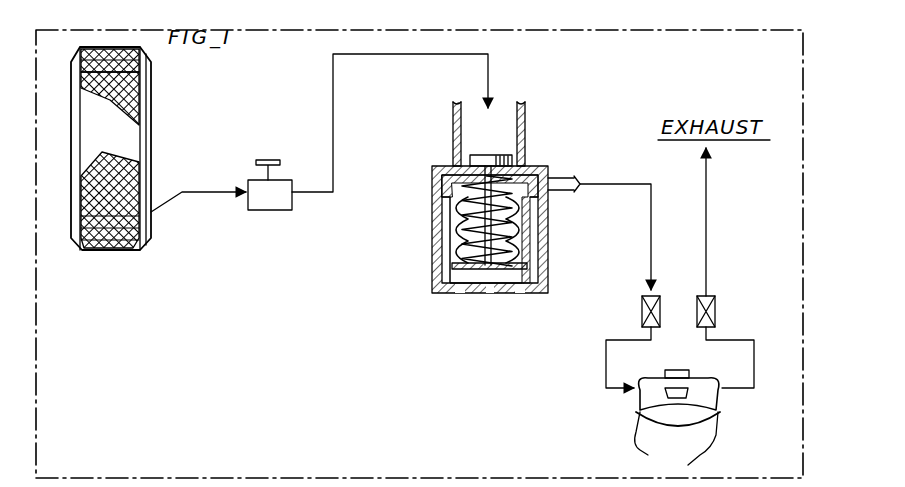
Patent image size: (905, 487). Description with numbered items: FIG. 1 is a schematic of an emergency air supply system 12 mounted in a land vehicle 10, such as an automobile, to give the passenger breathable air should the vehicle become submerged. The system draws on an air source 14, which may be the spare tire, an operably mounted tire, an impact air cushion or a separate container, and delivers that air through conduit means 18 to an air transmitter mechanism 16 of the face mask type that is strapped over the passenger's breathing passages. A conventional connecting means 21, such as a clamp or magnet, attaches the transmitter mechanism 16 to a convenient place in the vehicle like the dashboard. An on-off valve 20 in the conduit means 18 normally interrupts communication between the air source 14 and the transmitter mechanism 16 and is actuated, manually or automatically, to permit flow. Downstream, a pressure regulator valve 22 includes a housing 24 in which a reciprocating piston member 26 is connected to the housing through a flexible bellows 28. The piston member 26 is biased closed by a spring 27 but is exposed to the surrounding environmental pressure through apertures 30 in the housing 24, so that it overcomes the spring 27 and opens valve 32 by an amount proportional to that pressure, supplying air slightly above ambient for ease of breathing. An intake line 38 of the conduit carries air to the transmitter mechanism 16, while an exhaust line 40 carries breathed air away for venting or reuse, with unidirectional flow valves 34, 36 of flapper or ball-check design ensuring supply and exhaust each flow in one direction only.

The land vehicle 10 is at (808, 103).
The emergency air supply system 12 is at (270, 181).
The air source 14 is at (154, 107).
The air transmitter mechanism 16 is at (645, 403).
The conduit means 18 is at (190, 196).
The on-off valve 20 is at (262, 210).
The connecting means 21 is at (676, 370).
The pressure regulator valve 22 is at (436, 150).
The housing 24 is at (441, 250).
The reciprocating piston member 26 is at (476, 220).
The spring 27 is at (470, 249).
The flexible bellows 28 is at (532, 247).
The apertures 30 is at (457, 293).
The valve 32 is at (497, 157).
The unidirectional flow valve 34 is at (642, 312).
The unidirectional flow valve 36 is at (716, 306).
The intake line 38 is at (606, 368).
The exhaust line 40 is at (755, 355).